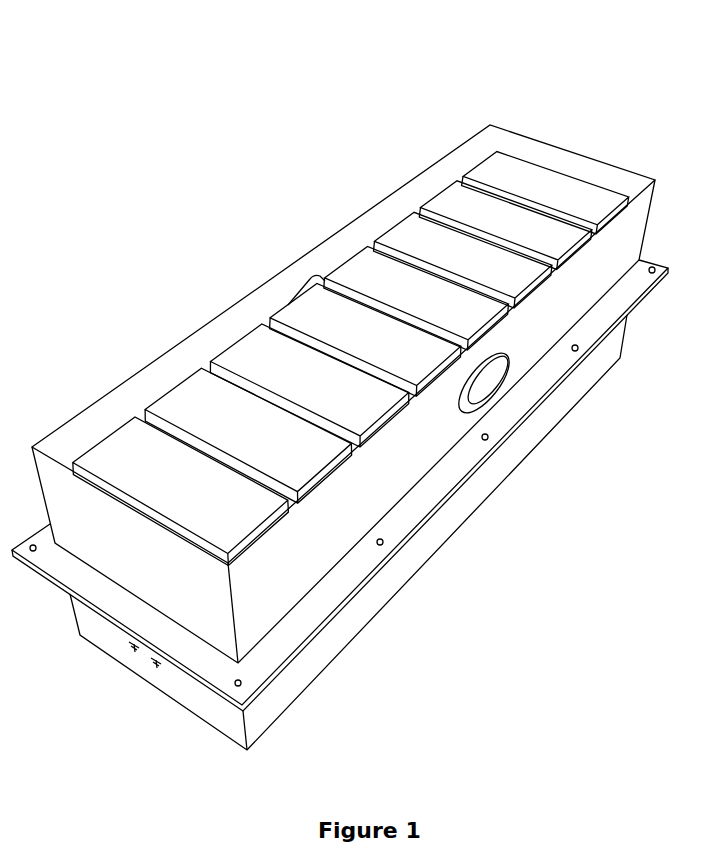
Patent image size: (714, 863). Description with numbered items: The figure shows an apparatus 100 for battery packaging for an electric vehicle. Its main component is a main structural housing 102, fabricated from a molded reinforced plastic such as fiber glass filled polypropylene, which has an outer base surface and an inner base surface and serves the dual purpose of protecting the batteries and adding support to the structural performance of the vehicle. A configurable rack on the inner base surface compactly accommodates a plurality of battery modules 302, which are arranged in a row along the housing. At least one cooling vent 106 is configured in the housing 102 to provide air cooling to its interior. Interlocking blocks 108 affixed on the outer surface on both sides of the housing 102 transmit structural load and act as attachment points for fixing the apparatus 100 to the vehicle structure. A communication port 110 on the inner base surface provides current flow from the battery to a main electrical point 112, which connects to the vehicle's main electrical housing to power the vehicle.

The apparatus for battery packaging 100 is at (127, 61).
The main structural housing 102 is at (292, 257).
The battery module 302 is at (260, 357).
The cooling vent 106 is at (497, 410).
The interlocking block 108 is at (399, 559).
The communication port 110 is at (350, 645).
The main electrical point 112 is at (146, 664).